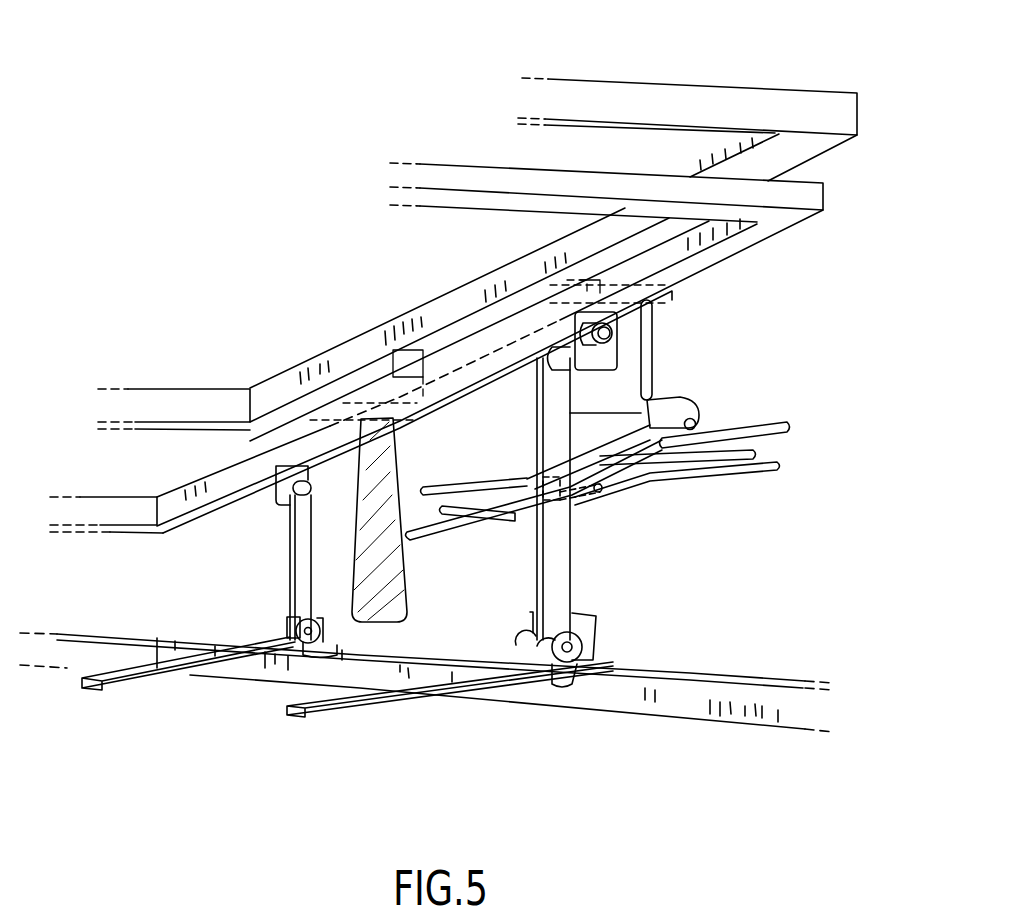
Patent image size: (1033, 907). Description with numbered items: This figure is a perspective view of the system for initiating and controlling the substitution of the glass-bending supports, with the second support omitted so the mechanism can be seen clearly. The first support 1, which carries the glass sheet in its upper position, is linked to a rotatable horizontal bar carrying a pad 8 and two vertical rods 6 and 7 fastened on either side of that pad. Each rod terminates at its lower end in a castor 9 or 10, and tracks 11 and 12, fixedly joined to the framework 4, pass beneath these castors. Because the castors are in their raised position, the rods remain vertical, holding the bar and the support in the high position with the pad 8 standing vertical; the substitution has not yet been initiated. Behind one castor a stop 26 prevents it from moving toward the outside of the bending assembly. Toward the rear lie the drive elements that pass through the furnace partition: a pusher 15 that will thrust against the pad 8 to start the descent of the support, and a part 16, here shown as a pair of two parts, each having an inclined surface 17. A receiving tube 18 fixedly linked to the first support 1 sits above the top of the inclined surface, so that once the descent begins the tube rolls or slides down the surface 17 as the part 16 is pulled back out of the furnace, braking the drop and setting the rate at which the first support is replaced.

The first support 1 is at (689, 88).
The framework 4 is at (67, 659).
The vertical rod 6 is at (298, 568).
The vertical rod 7 is at (553, 568).
The pad 8 is at (367, 567).
The castor 9 is at (290, 655).
The castor 10 is at (543, 682).
The track 11 is at (217, 664).
The track 12 is at (410, 698).
The pusher 15 is at (495, 508).
The part with inclined surface 16 is at (587, 504).
The inclined surface 17 is at (414, 502).
The receiving tube 18 is at (508, 470).
The stop 26 is at (596, 628).